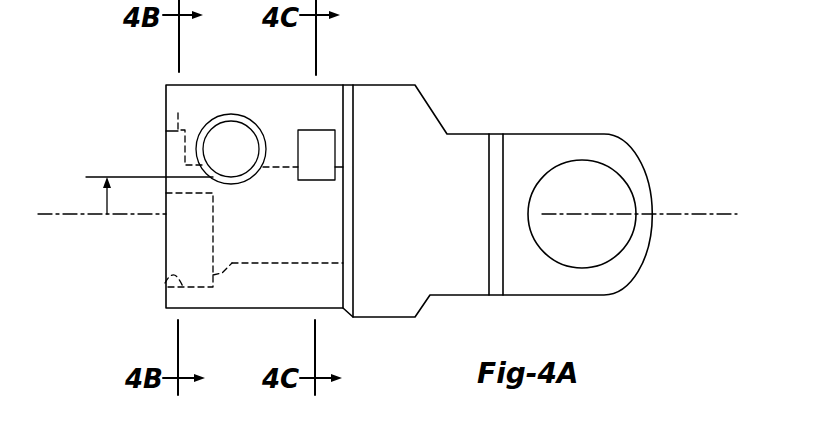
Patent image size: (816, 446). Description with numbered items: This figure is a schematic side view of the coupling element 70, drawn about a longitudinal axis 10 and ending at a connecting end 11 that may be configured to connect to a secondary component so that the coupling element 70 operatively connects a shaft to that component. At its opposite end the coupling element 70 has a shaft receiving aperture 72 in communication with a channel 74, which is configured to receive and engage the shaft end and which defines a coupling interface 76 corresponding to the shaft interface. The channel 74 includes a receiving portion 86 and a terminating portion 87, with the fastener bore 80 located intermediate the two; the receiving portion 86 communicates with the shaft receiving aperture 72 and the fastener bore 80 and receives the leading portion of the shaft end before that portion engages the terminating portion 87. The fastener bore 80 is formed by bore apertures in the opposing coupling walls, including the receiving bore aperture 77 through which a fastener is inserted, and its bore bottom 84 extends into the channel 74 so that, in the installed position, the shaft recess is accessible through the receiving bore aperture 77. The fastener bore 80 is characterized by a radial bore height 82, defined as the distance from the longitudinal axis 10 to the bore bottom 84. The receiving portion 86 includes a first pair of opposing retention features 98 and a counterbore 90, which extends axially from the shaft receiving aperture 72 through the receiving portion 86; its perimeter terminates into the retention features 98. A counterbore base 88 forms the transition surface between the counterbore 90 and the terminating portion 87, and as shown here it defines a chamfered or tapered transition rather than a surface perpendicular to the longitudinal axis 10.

The longitudinal axis 10 is at (82, 215).
The connecting end 11 is at (661, 173).
The coupling element 70 is at (498, 94).
The shaft receiving aperture 72 is at (166, 113).
The channel 74 is at (258, 237).
The coupling interface 76 is at (318, 225).
The receiving bore aperture 77 is at (240, 128).
The fastener bore 80 is at (237, 156).
The radial bore height 82 is at (107, 202).
The bore bottom 84 is at (238, 172).
The receiving portion 86 is at (186, 200).
The terminating portion 87 is at (326, 253).
The counterbore base 88 is at (210, 270).
The counterbore 90 is at (166, 280).
The retention features 98 is at (178, 113).